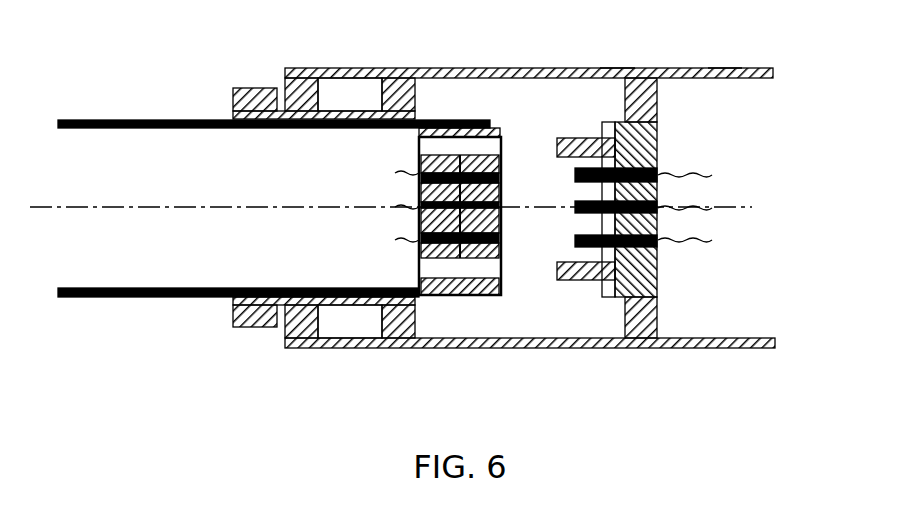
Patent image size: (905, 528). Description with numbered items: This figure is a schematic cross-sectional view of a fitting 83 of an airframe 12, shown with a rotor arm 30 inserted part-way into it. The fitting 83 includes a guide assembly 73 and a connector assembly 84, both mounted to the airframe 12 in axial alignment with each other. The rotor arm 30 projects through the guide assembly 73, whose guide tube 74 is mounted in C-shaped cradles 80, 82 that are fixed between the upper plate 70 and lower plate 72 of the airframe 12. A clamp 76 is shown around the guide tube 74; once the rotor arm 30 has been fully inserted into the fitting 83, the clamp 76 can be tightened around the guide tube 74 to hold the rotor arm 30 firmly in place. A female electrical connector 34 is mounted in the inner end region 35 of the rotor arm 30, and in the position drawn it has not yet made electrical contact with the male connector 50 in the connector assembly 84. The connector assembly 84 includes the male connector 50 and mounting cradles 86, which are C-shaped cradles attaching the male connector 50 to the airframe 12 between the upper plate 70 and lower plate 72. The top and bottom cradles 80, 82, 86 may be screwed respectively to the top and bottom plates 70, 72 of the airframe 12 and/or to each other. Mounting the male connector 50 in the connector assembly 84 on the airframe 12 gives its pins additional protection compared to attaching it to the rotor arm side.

The airframe 12 is at (725, 56).
The rotor arm 30 is at (130, 119).
The female electrical connector 34 is at (500, 133).
The inner end region 35 is at (462, 122).
The male connector 50 is at (638, 209).
The upper plate 70 is at (756, 67).
The lower plate 72 is at (756, 340).
The guide assembly 73 is at (326, 186).
The guide tube 74 is at (235, 115).
The clamp 76 is at (229, 204).
The C-shaped cradle 80 is at (416, 91).
The C-shaped cradle 82 is at (318, 92).
The fitting 83 is at (521, 246).
The connector assembly 84 is at (617, 56).
The mounting cradle 86 is at (658, 106).